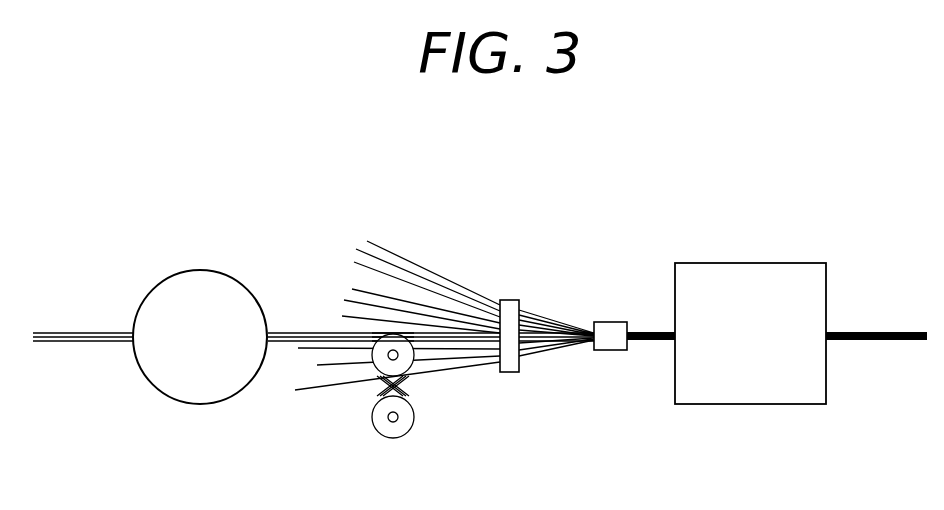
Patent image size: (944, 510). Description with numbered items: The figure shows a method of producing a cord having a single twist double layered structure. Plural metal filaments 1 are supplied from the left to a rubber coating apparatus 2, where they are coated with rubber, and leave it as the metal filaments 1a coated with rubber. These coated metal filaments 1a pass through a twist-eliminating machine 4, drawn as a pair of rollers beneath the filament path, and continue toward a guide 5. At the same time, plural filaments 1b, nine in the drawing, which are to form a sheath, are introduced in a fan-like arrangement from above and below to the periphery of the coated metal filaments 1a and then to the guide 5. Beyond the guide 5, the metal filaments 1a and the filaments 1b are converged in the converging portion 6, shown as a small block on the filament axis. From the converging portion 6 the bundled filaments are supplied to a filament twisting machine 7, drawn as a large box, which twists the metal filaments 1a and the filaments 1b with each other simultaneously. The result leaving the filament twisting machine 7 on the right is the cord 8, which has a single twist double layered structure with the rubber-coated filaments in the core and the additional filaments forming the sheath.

The metal filaments 1 is at (79, 337).
The metal filaments coated with rubber 1a is at (293, 337).
The filaments 1b is at (388, 275).
The rubber coating apparatus 2 is at (199, 292).
The twist-eliminating machine 4 is at (377, 430).
The guide 5 is at (510, 300).
The converging portion 6 is at (610, 322).
The filament twisting machine 7 is at (737, 263).
The cord 8 is at (867, 330).